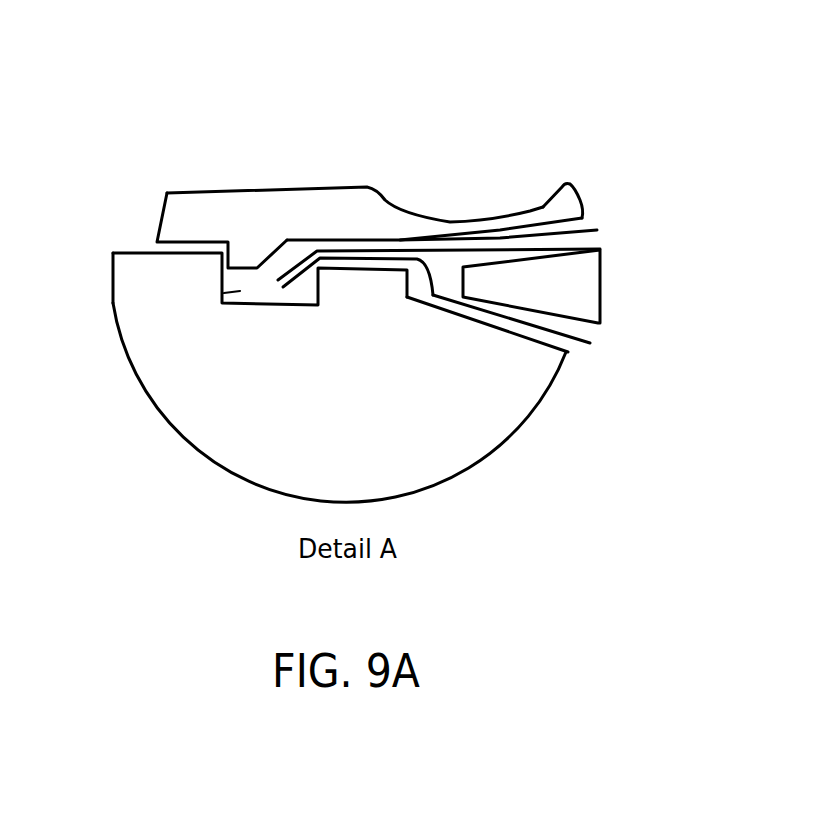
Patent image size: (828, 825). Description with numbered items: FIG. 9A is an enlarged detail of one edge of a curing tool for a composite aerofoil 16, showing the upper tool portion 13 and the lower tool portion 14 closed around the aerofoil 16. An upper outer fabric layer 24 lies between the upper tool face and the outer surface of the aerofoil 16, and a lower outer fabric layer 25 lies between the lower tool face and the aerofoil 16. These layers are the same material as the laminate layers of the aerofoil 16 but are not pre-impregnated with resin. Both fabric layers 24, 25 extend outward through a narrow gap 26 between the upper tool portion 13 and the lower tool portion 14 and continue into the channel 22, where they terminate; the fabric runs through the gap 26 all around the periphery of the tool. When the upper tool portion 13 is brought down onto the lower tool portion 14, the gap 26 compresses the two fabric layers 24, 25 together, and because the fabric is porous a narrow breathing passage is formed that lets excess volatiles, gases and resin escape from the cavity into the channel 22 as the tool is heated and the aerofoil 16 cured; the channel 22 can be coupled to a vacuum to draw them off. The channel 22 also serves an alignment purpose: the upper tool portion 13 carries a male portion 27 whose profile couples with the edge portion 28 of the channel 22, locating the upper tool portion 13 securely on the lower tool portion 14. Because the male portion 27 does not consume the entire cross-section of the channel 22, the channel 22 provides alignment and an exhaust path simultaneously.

The upper tool portion 13 is at (563, 213).
The lower tool portion 14 is at (510, 357).
The aerofoil 16 is at (580, 285).
The channel 22 is at (222, 300).
The upper outer fabric layer 24 is at (597, 230).
The lower outer fabric layer 25 is at (583, 342).
The gap 26 is at (405, 230).
The male portion 27 is at (248, 253).
The edge portion 28 is at (220, 266).